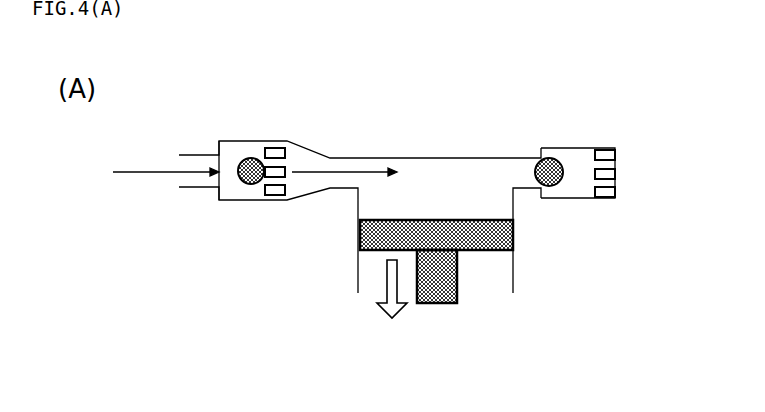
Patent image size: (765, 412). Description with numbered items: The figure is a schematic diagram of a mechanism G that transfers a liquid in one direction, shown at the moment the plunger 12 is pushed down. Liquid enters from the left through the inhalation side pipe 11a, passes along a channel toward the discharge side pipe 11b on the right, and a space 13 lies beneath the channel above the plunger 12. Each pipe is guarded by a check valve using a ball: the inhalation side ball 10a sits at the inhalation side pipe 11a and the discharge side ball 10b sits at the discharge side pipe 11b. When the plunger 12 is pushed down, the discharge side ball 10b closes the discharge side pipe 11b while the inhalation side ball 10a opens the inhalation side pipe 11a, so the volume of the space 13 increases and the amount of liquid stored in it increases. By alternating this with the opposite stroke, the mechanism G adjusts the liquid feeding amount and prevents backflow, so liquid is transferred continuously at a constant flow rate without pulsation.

The inhalation side ball 10a is at (247, 158).
The discharge side ball 10b is at (546, 158).
The inhalation side pipe 11a is at (180, 187).
The discharge side pipe 11b is at (610, 198).
The plunger 12 is at (457, 301).
The space 13 is at (493, 209).
The mechanism G is at (420, 122).